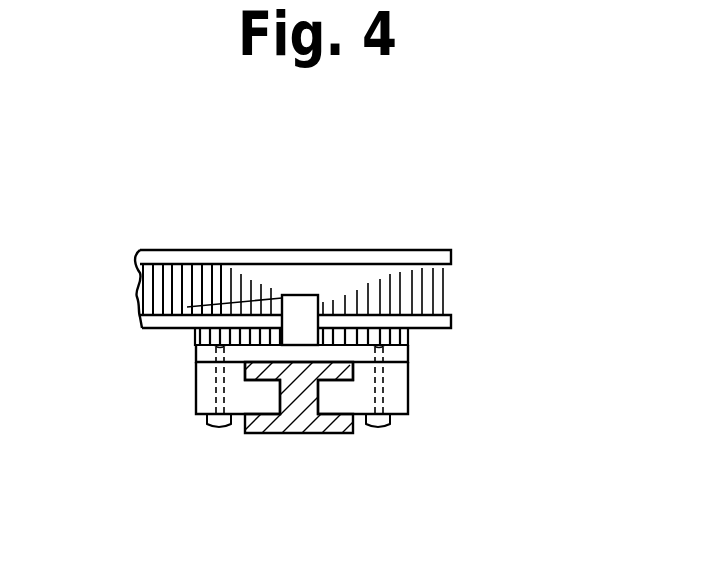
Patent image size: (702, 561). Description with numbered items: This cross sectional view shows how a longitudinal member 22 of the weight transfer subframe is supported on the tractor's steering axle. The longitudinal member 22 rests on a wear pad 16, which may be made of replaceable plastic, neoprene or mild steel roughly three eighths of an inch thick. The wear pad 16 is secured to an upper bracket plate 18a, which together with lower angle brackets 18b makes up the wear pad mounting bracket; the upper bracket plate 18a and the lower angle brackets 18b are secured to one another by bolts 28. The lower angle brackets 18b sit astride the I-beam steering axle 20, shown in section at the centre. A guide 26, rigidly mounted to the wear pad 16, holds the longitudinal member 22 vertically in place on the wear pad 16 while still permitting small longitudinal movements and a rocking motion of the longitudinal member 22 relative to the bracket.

The longitudinal member 22 is at (342, 259).
The guide 26 is at (302, 310).
The wear pad 16 is at (408, 338).
The upper bracket plate 18a is at (207, 353).
The lower angle bracket 18b is at (207, 392).
The I-beam steering axle 20 is at (308, 432).
The bolt 28 is at (213, 430).